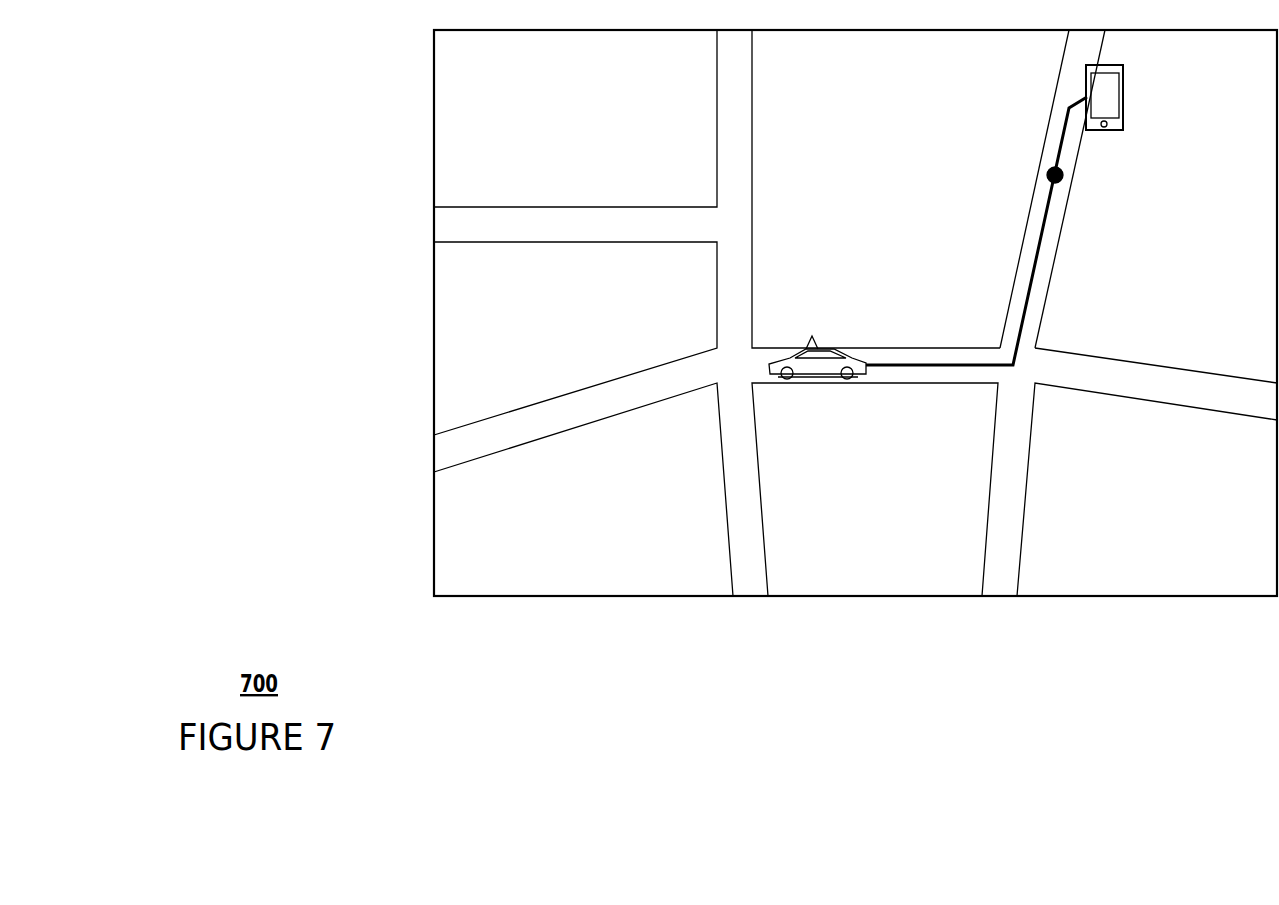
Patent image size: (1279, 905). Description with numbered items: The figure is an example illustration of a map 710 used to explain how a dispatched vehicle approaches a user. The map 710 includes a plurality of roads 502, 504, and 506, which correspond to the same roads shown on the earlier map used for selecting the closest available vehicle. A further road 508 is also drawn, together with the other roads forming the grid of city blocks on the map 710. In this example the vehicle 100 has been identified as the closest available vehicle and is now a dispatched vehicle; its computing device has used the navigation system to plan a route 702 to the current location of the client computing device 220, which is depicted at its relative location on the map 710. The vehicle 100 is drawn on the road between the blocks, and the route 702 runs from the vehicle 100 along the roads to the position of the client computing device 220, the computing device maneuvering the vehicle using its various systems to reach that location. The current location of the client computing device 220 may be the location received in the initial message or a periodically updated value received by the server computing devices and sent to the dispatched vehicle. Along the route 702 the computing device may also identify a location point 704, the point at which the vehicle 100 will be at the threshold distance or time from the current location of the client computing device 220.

The map 710 is at (432, 70).
The road 502 is at (560, 242).
The road 504 is at (752, 172).
The road 506 is at (882, 386).
The road 508 is at (1052, 103).
The route 702 is at (1037, 298).
The pickup location marker 704 is at (1040, 183).
The client computing device 220 is at (1127, 102).
The vehicle 100 is at (812, 386).